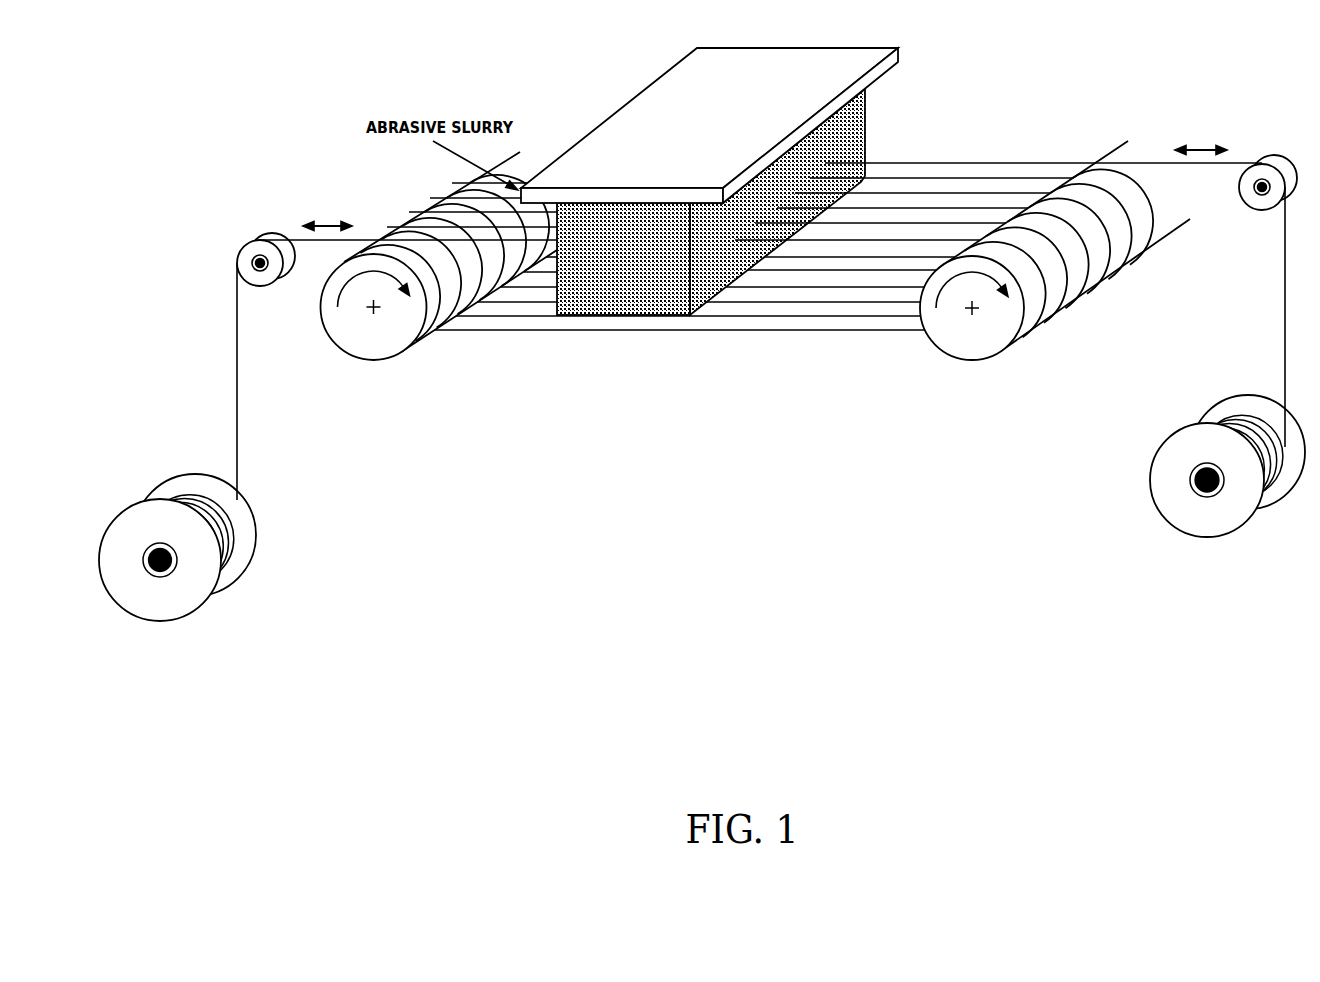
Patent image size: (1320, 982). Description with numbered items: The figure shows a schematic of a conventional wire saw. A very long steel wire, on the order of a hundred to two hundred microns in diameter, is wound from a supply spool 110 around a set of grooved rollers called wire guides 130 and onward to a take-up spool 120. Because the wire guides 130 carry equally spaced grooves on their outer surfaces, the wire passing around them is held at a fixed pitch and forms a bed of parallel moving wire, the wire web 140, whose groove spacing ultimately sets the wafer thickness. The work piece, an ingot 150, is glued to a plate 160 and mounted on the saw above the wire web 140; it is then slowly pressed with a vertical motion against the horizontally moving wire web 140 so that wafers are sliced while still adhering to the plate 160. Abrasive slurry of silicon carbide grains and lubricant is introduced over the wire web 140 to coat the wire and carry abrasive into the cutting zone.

The supply spool 110 is at (160, 622).
The take-up spool 120 is at (1207, 537).
The wire guides 130 is at (379, 355).
The wire web 140 is at (700, 323).
The ingot 150 is at (857, 130).
The plate 160 is at (633, 118).